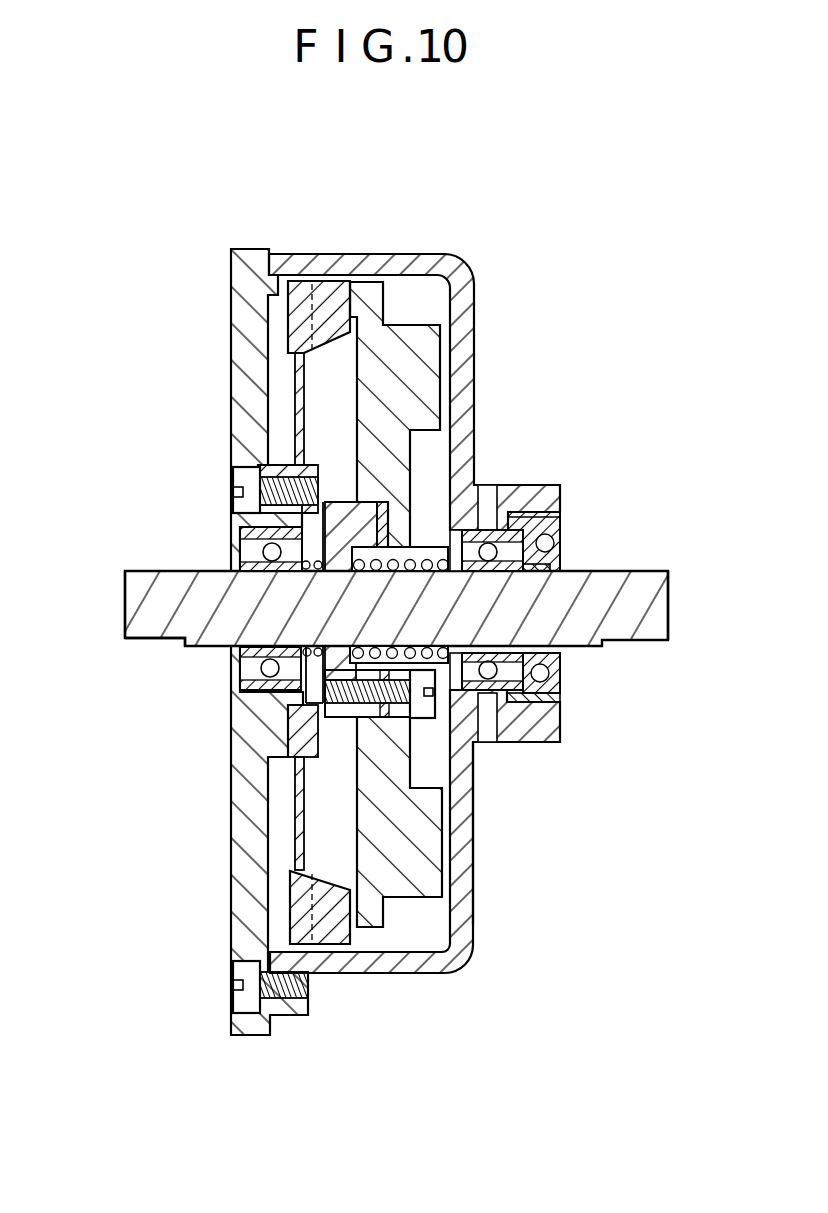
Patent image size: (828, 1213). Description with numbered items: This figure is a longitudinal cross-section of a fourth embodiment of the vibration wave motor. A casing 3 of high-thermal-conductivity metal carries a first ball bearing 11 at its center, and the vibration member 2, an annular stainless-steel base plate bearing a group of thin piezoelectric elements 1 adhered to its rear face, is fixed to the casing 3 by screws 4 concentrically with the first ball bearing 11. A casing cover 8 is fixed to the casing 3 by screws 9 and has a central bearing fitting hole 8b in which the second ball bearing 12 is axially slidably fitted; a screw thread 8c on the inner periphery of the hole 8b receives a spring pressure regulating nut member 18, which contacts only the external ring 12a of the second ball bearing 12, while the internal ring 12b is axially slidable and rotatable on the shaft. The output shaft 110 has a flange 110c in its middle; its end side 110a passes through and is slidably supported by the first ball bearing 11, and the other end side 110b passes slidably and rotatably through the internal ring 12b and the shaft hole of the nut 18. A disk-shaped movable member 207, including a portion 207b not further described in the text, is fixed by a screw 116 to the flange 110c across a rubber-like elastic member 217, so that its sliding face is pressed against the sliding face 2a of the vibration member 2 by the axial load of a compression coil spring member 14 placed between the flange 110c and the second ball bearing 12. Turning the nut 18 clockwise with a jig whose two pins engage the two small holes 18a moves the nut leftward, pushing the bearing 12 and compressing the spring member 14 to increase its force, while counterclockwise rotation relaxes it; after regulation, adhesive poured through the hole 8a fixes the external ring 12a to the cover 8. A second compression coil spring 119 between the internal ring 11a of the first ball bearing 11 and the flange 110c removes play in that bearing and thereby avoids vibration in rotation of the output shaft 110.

The piezoelectric elements 1 is at (288, 272).
The vibration member 2 is at (302, 268).
The sliding face 2a is at (338, 270).
The casing 3 is at (240, 281).
The screws 4 is at (237, 480).
The casing cover 8 is at (402, 963).
The hole 8a is at (490, 497).
The bearing fitting hole 8b is at (523, 540).
The screw thread 8c is at (523, 513).
The screws 9 is at (237, 997).
The first ball bearing 11 is at (263, 670).
The internal ring 11a is at (240, 568).
The second ball bearing 12 is at (490, 690).
The external ring 12a is at (507, 698).
The internal ring 12b is at (560, 567).
The compression coil spring member 14 is at (413, 562).
The spring pressure regulating nut member 18 is at (518, 520).
The small holes 18a is at (543, 675).
The output shaft 110 is at (163, 588).
The end side 110a is at (133, 618).
The other end side 110b is at (660, 627).
The flange 110c is at (210, 643).
The screw 116 is at (468, 800).
The second compression coil spring 119 is at (295, 696).
The movable member 207 is at (420, 320).
The rotor block 207b is at (370, 323).
The rubber-like elastic member 217 is at (375, 505).